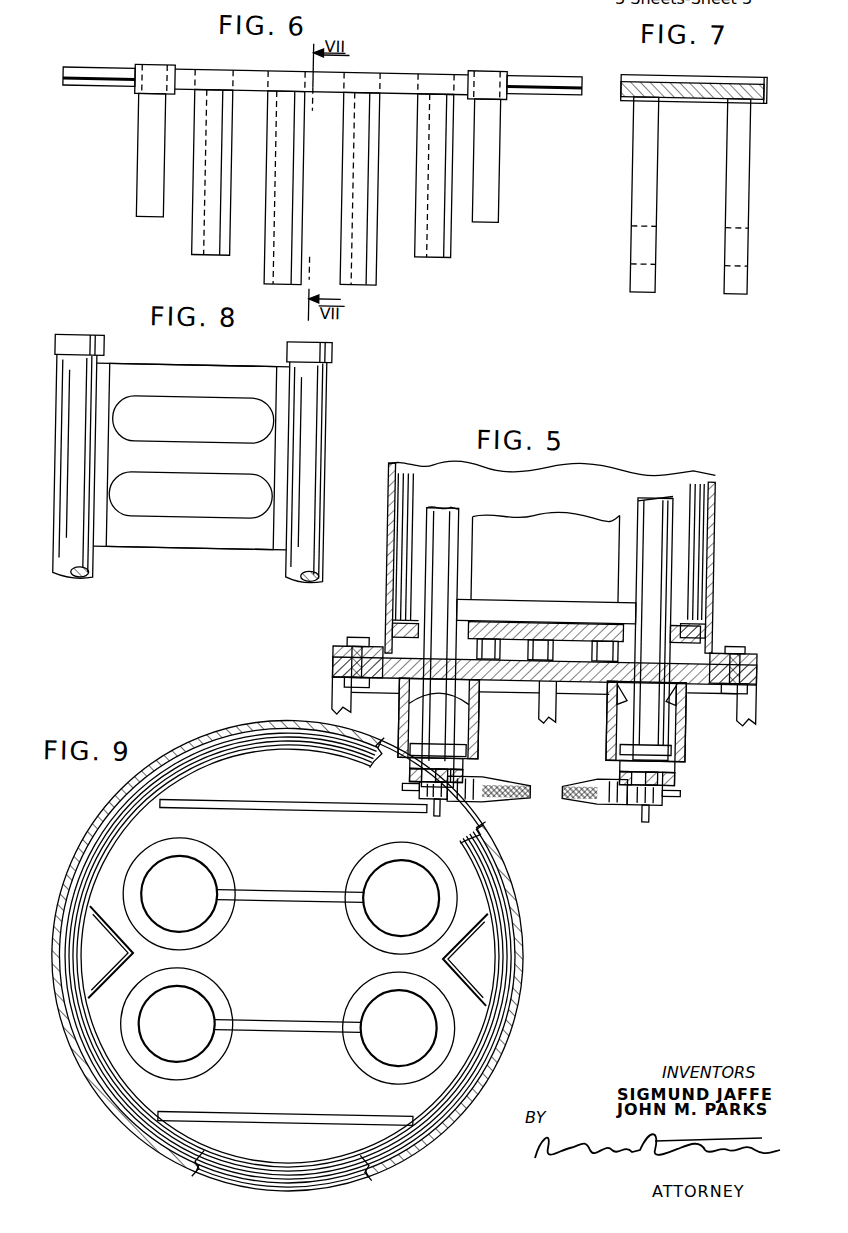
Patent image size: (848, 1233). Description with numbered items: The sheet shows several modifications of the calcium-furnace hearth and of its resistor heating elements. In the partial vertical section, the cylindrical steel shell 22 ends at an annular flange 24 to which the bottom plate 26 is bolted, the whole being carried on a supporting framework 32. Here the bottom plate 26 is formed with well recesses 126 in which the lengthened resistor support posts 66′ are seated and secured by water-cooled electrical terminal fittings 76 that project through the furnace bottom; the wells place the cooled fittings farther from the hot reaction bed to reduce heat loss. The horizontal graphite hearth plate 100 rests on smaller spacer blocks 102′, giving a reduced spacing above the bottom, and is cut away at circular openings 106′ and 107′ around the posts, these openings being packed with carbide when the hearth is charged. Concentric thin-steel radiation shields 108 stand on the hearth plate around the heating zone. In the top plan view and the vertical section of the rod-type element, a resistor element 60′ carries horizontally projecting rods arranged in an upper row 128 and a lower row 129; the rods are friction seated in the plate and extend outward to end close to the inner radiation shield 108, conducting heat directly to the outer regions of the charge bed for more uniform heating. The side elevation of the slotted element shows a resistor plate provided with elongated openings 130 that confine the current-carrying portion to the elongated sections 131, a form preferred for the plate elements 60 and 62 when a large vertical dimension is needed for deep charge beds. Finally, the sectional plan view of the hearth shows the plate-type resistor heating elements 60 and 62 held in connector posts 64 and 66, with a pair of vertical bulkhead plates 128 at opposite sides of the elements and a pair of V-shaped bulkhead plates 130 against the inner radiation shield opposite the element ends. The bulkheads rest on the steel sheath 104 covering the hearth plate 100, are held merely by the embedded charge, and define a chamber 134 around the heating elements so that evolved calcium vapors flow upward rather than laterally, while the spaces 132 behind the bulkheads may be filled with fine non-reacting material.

In FIG. 5, the furnace shell 22 is at (385, 498).
In FIG. 9, the furnace shell 22 is at (98, 829).
In FIG. 5, the annular flange 24 is at (757, 653).
In FIG. 5, the bottom plate 26 is at (333, 669).
In FIG. 5, the supporting framework 32 is at (333, 706).
In FIG. 9, the resistor heating element 60 is at (299, 1031).
In FIG. 6, the resistor element 60′ is at (265, 76).
In FIG. 7, the resistor element 60′ is at (762, 90).
In FIG. 5, the resistor heating element 62 is at (552, 522).
In FIG. 9, the resistor heating element 62 is at (319, 894).
In FIG. 9, the connector post 64 is at (192, 1002).
In FIG. 9, the connector post 66 is at (193, 874).
In FIG. 5, the resistor support post 66′ is at (448, 580).
In FIG. 5, the electrical terminal fitting 76 is at (444, 799).
In FIG. 5, the hearth plate 100 is at (590, 624).
In FIG. 5, the spacer blocks 102′ is at (485, 660).
In FIG. 9, the steel sheet 104 is at (163, 1095).
In FIG. 5, the cut-out opening 106′ is at (383, 648).
In FIG. 9, the cut-out opening 106′ is at (169, 842).
In FIG. 5, the cut-out opening 107′ is at (676, 650).
In FIG. 9, the cut-out opening 107′ is at (353, 871).
In FIG. 5, the radiation shield 108 is at (404, 542).
In FIG. 9, the radiation shield 108 is at (95, 1027).
In FIG. 5, the well recess 126 is at (402, 705).
In FIG. 6, the upper row of rods / vertical bulkhead plates 128 is at (193, 230).
In FIG. 7, the upper row of rods / vertical bulkhead plates 128 is at (645, 293).
In FIG. 9, the upper row of rods / vertical bulkhead plates 128 is at (319, 804).
In FIG. 6, the lower row of rods 129 is at (223, 236).
In FIG. 7, the lower row of rods 129 is at (729, 293).
In FIG. 8, the elongated openings / V-shaped bulkhead plates 130 is at (198, 428).
In FIG. 9, the elongated openings / V-shaped bulkhead plates 130 is at (110, 979).
In FIG. 8, the elongated sections 131 is at (258, 378).
In FIG. 9, the spaces 132 is at (241, 776).
In FIG. 9, the chamber 134 is at (305, 944).